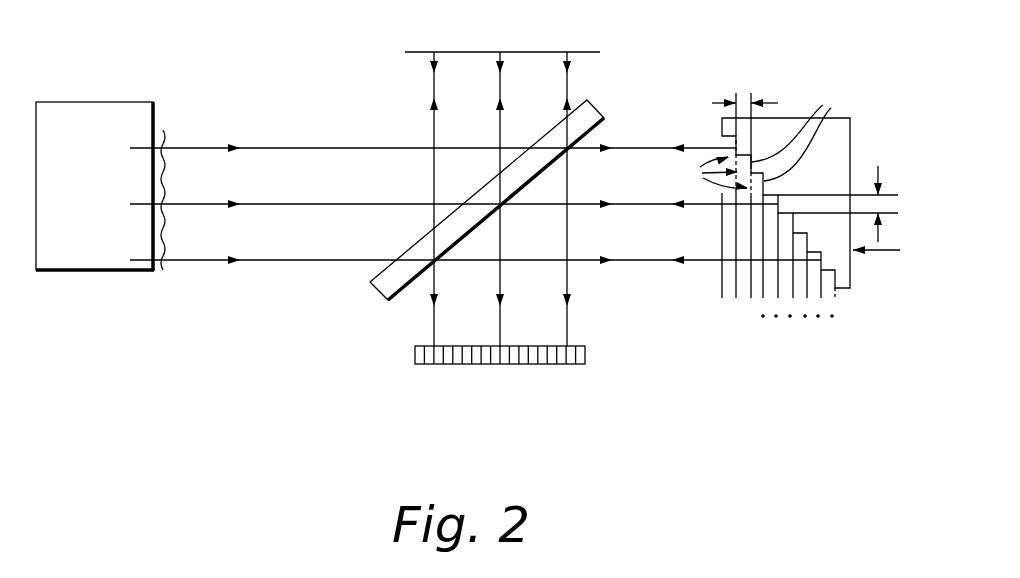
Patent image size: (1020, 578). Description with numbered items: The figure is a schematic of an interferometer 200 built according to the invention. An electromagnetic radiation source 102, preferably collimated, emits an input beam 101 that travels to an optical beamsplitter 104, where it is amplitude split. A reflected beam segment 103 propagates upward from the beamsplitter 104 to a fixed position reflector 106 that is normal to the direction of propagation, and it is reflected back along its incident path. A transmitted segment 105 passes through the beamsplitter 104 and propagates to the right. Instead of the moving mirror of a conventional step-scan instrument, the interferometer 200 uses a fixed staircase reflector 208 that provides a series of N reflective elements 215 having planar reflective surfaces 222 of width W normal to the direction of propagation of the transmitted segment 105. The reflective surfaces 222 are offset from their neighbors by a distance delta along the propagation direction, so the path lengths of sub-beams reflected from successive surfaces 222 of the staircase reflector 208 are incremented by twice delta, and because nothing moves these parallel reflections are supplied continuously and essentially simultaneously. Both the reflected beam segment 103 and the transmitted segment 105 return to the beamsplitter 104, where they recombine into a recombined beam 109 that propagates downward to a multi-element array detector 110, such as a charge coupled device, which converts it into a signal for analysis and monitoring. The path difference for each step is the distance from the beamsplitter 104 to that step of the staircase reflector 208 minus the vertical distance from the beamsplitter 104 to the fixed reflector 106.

The interferometer 200 is at (299, 80).
The electromagnetic radiation source 102 is at (90, 101).
The input beam 101 is at (281, 270).
The reflected beam segment 103 is at (424, 110).
The beamsplitter 104 is at (386, 298).
The transmitted segment 105 is at (677, 268).
The fixed position reflector 106 is at (588, 53).
The recombined beam 109 is at (580, 322).
The detector 110 is at (437, 378).
The staircase reflector 208 is at (849, 268).
The reflective elements 215 is at (704, 172).
The planar reflective surfaces 222 is at (806, 134).